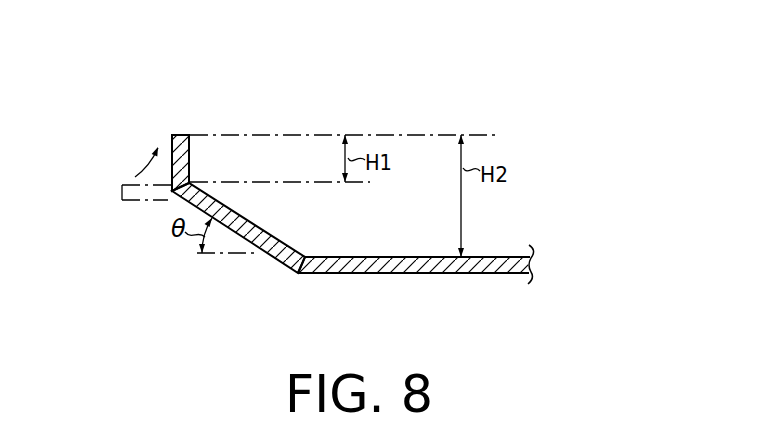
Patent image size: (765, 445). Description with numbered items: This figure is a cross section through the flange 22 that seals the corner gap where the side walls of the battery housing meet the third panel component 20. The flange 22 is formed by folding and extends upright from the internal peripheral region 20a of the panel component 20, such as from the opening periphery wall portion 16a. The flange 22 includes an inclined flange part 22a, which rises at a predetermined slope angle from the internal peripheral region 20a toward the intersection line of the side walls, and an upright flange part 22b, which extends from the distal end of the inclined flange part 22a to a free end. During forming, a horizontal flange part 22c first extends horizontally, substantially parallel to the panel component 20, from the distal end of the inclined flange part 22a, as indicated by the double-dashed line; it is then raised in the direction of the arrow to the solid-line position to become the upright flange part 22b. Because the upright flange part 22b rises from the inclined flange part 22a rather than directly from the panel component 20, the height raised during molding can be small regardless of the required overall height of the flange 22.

The flange 22 is at (240, 159).
The inclined flange part 22a is at (233, 212).
The upright flange part 22b is at (190, 158).
The horizontal flange part 22c is at (122, 190).
The third panel component 20 is at (441, 239).
The opening periphery wall portion 16a is at (512, 257).
The internal peripheral region 20a is at (298, 275).